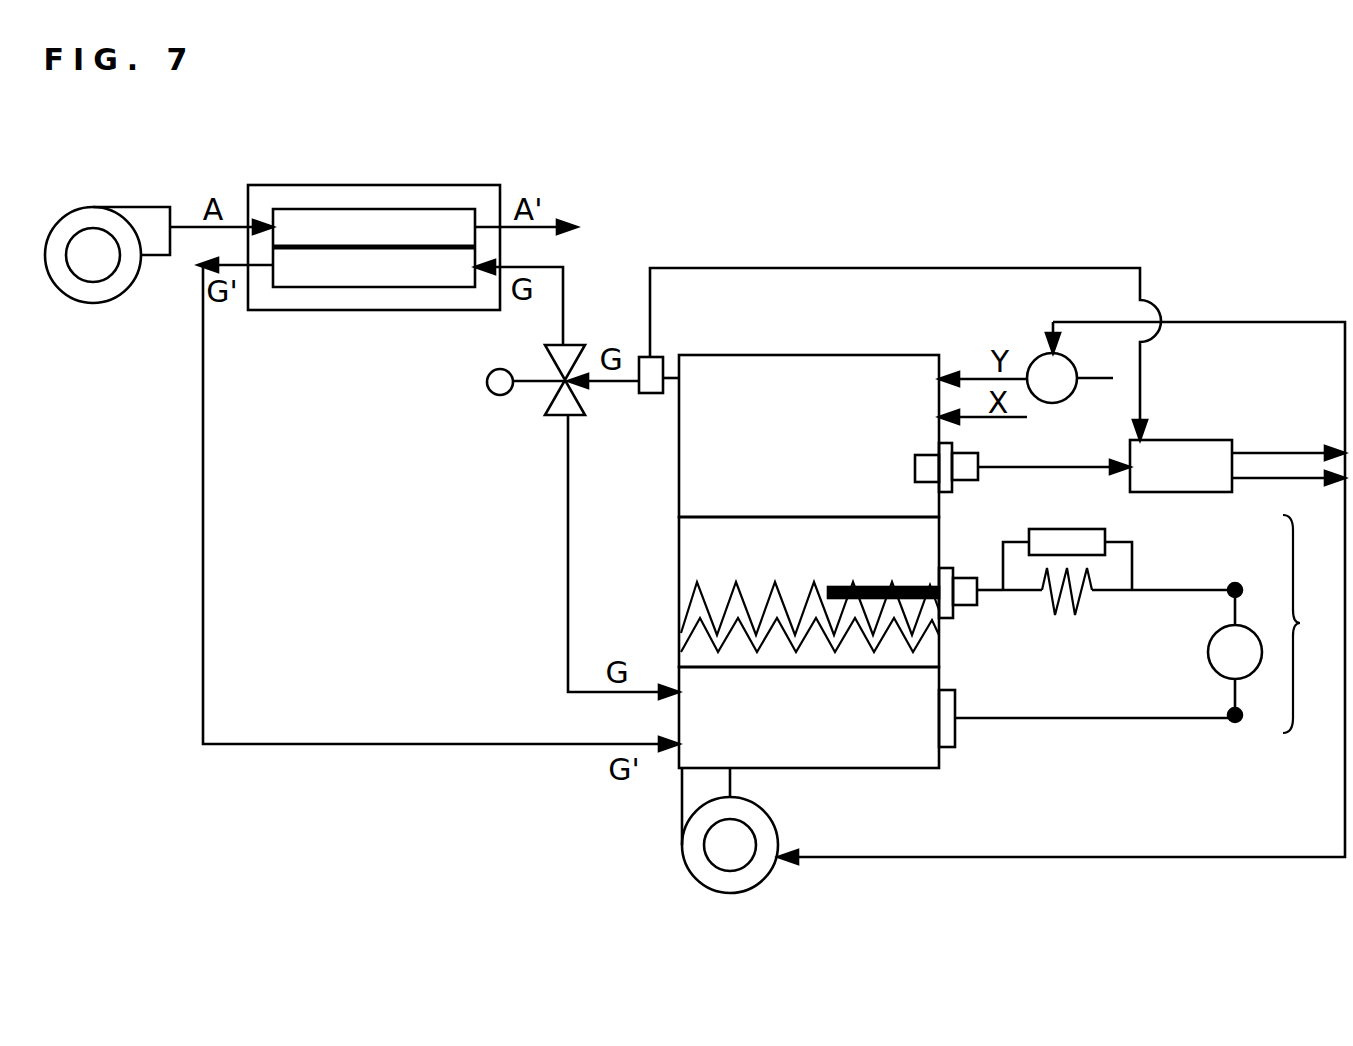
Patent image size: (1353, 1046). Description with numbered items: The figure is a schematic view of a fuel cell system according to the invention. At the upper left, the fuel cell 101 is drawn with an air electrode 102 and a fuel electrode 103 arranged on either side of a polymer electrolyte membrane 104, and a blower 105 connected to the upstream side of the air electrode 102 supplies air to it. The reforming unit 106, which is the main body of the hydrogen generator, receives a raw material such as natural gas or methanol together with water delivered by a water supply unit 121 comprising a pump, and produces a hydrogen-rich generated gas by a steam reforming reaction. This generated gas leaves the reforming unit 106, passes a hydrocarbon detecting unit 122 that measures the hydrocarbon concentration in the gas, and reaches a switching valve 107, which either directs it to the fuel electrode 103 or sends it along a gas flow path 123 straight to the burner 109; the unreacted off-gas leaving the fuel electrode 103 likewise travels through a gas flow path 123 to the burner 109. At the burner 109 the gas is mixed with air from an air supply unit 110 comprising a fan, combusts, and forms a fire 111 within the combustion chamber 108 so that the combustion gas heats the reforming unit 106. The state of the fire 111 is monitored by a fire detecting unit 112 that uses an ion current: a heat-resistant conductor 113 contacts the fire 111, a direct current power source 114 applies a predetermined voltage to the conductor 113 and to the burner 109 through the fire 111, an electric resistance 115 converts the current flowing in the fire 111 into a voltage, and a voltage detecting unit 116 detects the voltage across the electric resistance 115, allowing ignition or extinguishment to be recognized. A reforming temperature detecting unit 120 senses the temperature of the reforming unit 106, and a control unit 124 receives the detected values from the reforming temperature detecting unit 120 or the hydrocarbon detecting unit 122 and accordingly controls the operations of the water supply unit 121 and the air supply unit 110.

The fuel cell 101 is at (293, 184).
The air electrode 102 is at (375, 218).
The fuel electrode 103 is at (382, 273).
The polymer electrolyte membrane 104 is at (297, 250).
The blower 105 is at (80, 207).
The reforming unit 106 is at (747, 382).
The switching valve 107 is at (582, 347).
The combustion chamber 108 is at (675, 553).
The burner 109 is at (877, 753).
The air supply unit 110 is at (682, 842).
The fire 111 is at (683, 628).
The fire detecting unit 112 is at (1178, 624).
The heat-resistant conductor 113 is at (900, 587).
The direct current power source 114 is at (1227, 628).
The electric resistance 115 is at (1067, 615).
The voltage detecting unit 116 is at (1103, 553).
The reforming temperature detecting unit 120 is at (915, 453).
The water supply unit 121 is at (1037, 355).
The hydrocarbon detecting unit 122 is at (663, 353).
The gas flow path 123 is at (568, 677).
The control unit 124 is at (1200, 440).